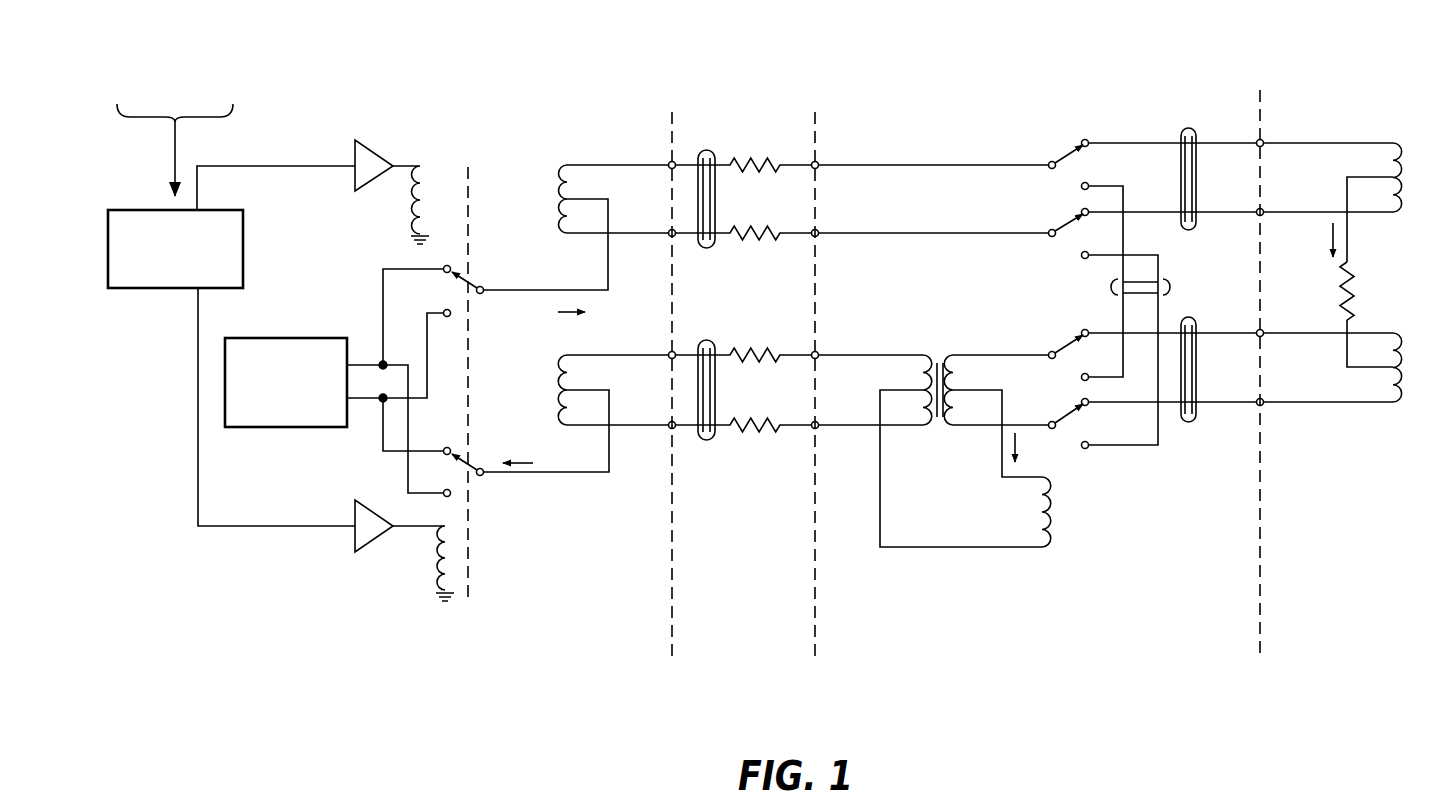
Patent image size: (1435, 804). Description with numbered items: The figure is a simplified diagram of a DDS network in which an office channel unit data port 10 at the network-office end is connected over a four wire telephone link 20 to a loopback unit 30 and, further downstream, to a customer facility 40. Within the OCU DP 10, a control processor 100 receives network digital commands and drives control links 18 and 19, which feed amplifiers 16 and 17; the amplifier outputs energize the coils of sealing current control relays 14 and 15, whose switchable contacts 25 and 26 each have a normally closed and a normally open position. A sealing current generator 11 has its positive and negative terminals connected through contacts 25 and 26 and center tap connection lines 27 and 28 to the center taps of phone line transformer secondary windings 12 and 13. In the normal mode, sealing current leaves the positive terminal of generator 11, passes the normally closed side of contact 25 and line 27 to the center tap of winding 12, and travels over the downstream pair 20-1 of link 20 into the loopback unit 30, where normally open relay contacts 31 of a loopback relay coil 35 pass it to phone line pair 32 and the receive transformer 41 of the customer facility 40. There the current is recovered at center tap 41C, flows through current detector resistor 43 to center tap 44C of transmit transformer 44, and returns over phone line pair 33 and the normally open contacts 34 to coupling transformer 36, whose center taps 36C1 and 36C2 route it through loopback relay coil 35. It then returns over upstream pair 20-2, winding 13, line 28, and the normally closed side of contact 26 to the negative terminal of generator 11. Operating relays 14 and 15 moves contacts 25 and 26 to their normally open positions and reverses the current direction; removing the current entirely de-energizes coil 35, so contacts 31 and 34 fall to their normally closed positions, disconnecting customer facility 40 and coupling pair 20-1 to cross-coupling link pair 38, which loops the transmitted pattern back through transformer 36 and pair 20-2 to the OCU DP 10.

The office channel unit data port (OCU DP) 10 is at (392, 691).
The sealing current source 11 is at (276, 338).
The phone line transformer secondary winding 12 is at (580, 165).
The phone line transformer secondary winding 13 is at (560, 425).
The sealing current control relay 14 is at (421, 172).
The sealing current control relay 15 is at (450, 556).
The amplifier 16 is at (372, 152).
The amplifier 17 is at (372, 540).
The control link 18 is at (250, 167).
The control link 19 is at (213, 527).
The four wire telephone link 20 is at (747, 718).
The downstream T-R pair 20-1 is at (708, 150).
The upstream phone line pair 20-2 is at (708, 340).
The relay contact 25 is at (474, 296).
The relay contact 26 is at (458, 462).
The center tap connection line 27 is at (530, 290).
The center tap connection line 28 is at (514, 472).
The loopback unit 30 is at (1049, 690).
The relay contacts 31 is at (1058, 190).
The phone line pair 32 is at (1192, 126).
The phone line pair 33 is at (1196, 418).
The relay contacts 34 is at (1058, 375).
The loopback relay coil 35 is at (1046, 538).
The coupling transformer 36 is at (923, 358).
The center tap 36C1 is at (972, 388).
The center tap 36C2 is at (900, 388).
The cross-coupling link pair 38 is at (1172, 288).
The customer facility 40 is at (1369, 718).
The receive transformer 41 is at (1395, 150).
The center tap 41C is at (1357, 176).
The current detector resistor 43 is at (1353, 291).
The transmit transformer 44 is at (1395, 340).
The center tap 44C is at (1375, 370).
The control processor 100 is at (243, 246).